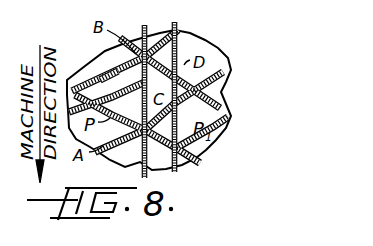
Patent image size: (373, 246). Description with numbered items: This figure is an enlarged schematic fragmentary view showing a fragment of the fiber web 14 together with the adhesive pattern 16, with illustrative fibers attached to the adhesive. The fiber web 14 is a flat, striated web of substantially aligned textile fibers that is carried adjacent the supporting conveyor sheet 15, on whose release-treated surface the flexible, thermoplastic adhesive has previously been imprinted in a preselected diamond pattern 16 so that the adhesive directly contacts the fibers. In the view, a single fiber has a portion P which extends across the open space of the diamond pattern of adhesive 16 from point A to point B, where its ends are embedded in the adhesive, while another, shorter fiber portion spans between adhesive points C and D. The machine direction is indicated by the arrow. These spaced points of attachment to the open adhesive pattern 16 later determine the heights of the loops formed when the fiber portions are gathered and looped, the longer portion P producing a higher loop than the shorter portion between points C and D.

The fiber web 14 is at (186, 149).
The supporting conveyor sheet 15 is at (193, 37).
The adhesive pattern 16 is at (114, 71).